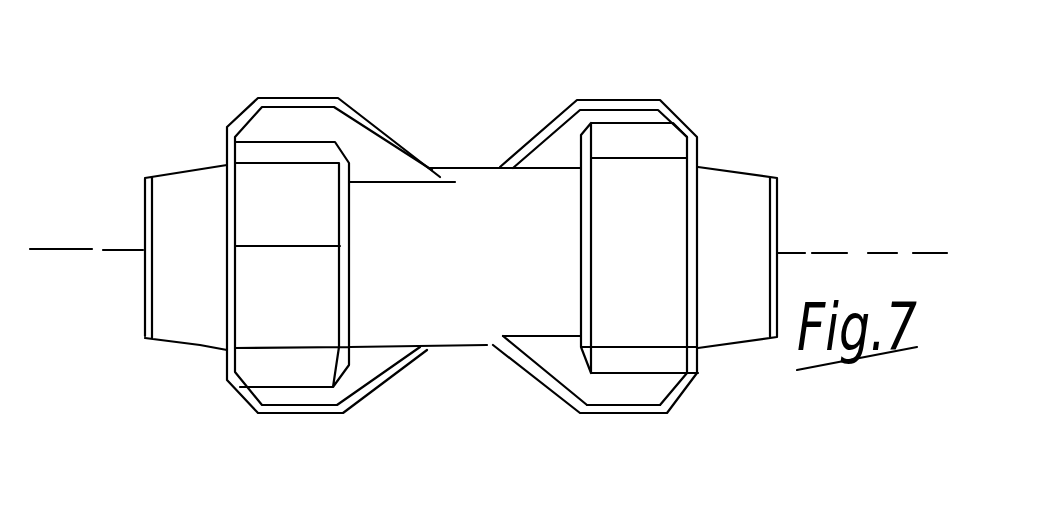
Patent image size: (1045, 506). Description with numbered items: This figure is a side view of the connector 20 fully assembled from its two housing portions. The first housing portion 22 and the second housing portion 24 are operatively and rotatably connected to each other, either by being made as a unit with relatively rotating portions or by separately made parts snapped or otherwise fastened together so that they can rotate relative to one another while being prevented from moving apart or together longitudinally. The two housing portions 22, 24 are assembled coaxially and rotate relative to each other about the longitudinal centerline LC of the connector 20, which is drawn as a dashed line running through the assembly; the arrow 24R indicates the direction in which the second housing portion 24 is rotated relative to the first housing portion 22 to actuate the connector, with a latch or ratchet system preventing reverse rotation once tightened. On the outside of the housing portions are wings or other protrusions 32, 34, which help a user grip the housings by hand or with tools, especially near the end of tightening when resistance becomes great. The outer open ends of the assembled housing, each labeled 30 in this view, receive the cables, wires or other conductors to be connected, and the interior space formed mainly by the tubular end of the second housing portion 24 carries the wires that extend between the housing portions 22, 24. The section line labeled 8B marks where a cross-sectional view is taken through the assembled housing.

The connector 20 is at (167, 32).
The first housing portion 22 is at (265, 192).
The second housing portion 24 is at (560, 138).
The rotation direction arrow 24R is at (575, 455).
The tube end 30 is at (128, 248).
The wing or protrusion 32 is at (277, 410).
The wing or protrusion 34 is at (648, 105).
The longitudinal centerline LC is at (805, 253).
The section line 8B is at (352, 56).